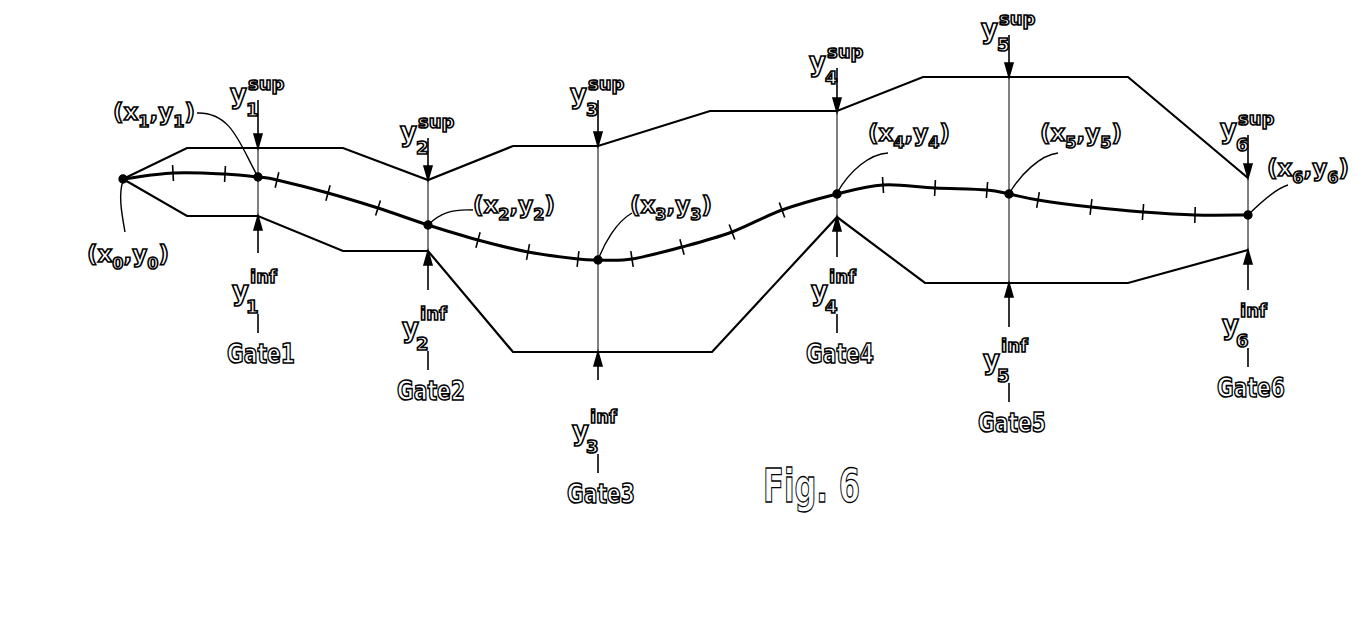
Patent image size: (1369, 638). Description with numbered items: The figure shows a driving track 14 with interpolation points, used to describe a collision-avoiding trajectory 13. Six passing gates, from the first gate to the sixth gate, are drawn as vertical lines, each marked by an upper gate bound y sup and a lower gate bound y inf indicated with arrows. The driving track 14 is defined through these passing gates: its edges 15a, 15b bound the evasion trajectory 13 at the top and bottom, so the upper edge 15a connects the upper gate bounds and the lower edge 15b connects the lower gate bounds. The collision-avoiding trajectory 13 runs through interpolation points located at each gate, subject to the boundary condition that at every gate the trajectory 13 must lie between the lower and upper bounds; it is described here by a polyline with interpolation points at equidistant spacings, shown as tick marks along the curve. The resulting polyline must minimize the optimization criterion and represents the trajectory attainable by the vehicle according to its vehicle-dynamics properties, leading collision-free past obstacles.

The collision-avoiding trajectory 13 is at (1162, 203).
The driving track 14 is at (685, 183).
The upper edge of driving track 15a is at (1105, 77).
The lower edge of driving track 15b is at (1105, 285).